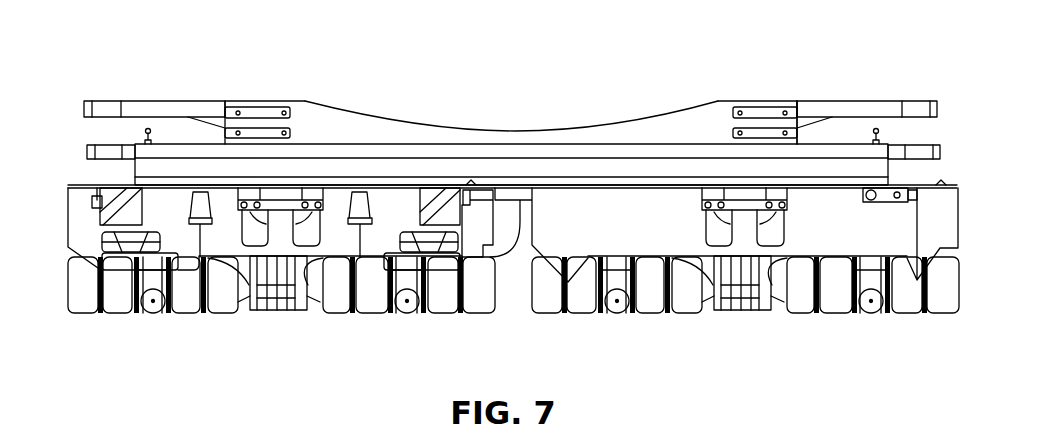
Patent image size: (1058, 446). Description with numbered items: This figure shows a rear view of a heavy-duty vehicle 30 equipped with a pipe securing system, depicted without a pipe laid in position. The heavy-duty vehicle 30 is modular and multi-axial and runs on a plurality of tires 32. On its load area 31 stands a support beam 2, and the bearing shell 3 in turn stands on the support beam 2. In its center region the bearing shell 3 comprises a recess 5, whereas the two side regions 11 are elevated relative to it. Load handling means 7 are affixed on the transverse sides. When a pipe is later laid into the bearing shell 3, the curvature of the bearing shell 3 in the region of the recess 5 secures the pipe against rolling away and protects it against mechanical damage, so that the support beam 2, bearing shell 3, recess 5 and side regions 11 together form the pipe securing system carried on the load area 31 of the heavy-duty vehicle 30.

The support beam 2 is at (867, 167).
The bearing shell 3 is at (783, 108).
The recess 5 is at (507, 130).
The load handling means 7 is at (148, 110).
The side regions 11 is at (283, 102).
The heavy-duty vehicle 30 is at (937, 230).
The load area 31 is at (85, 185).
The tires 32 is at (86, 298).